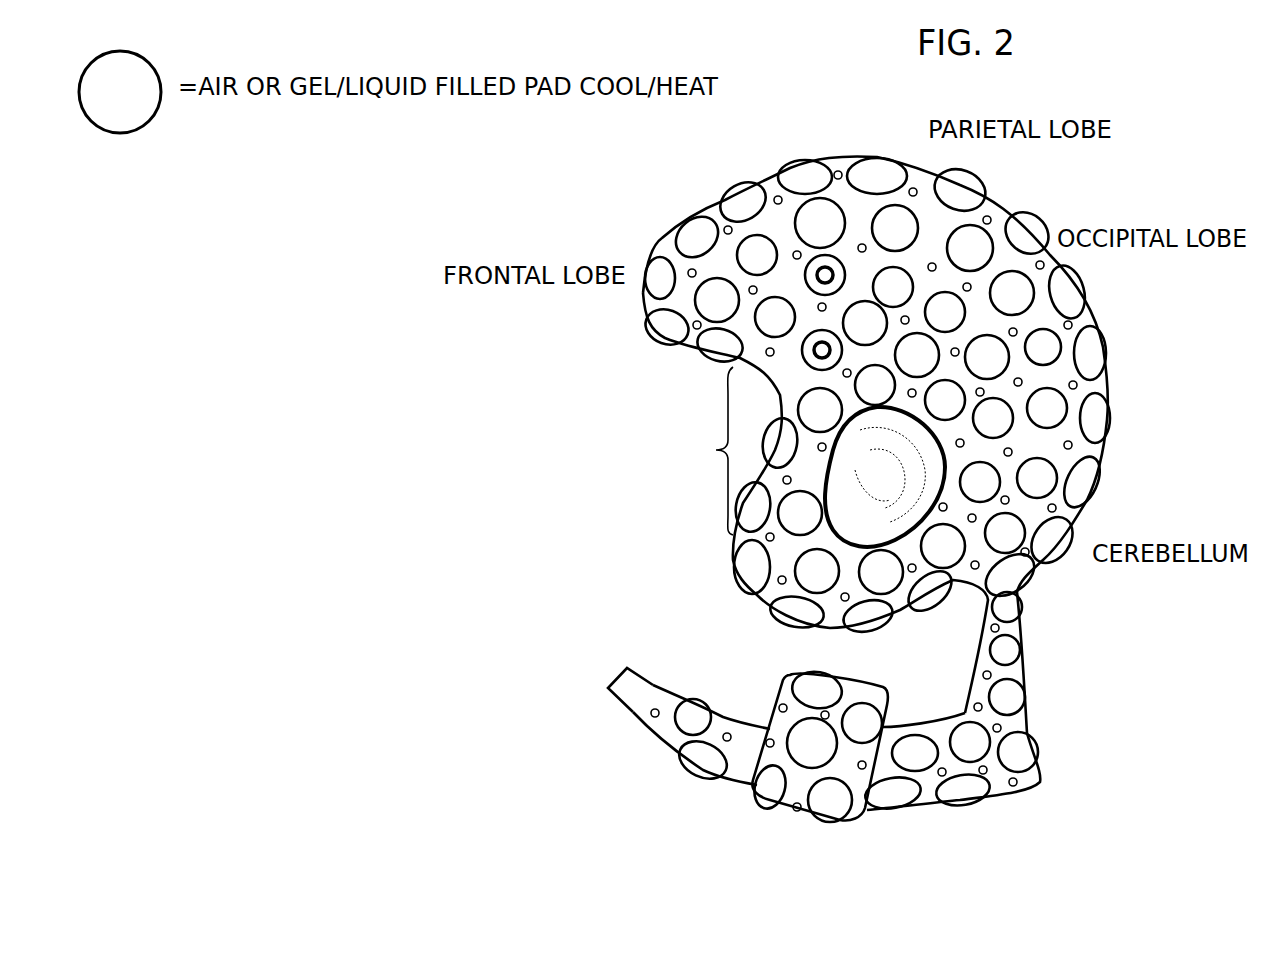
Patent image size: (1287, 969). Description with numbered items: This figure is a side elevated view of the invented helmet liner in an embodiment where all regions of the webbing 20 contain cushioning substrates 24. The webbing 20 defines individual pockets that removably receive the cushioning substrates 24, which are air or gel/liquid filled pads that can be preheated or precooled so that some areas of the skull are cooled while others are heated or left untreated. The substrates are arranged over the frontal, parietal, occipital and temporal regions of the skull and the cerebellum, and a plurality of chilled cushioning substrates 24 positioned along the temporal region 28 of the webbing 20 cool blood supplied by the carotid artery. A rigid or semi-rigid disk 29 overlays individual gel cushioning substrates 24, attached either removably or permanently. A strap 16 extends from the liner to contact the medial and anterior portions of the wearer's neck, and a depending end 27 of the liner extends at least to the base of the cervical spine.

The webbing 20 is at (857, 215).
The cushioning substrate 24 is at (967, 248).
The disk 29 is at (820, 350).
The temporal region 28 is at (606, 451).
The strap 16 is at (675, 738).
The depending end 27 is at (1042, 782).